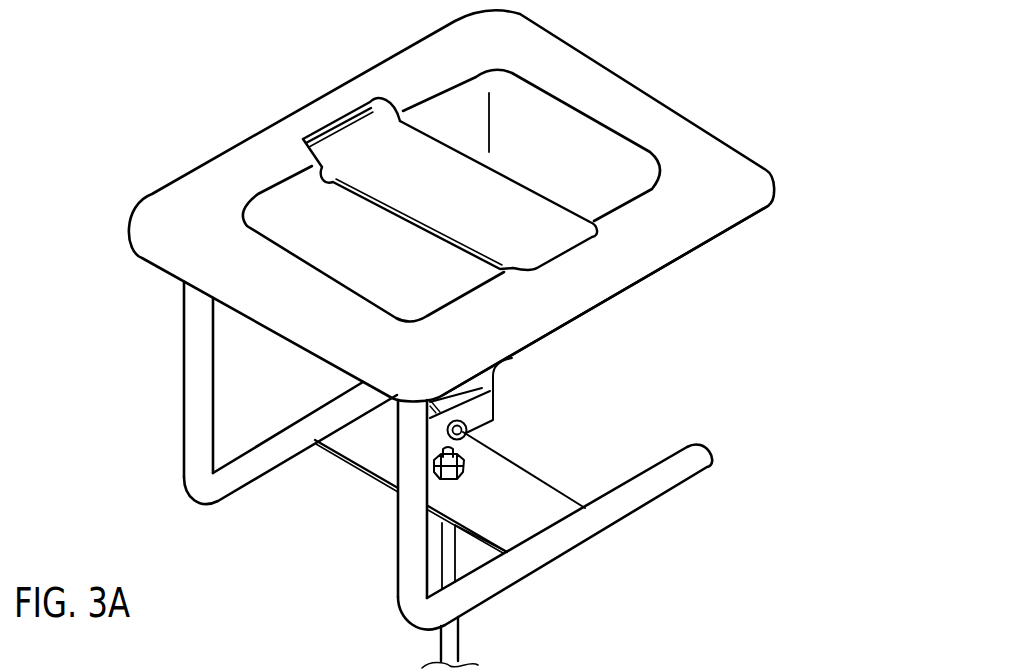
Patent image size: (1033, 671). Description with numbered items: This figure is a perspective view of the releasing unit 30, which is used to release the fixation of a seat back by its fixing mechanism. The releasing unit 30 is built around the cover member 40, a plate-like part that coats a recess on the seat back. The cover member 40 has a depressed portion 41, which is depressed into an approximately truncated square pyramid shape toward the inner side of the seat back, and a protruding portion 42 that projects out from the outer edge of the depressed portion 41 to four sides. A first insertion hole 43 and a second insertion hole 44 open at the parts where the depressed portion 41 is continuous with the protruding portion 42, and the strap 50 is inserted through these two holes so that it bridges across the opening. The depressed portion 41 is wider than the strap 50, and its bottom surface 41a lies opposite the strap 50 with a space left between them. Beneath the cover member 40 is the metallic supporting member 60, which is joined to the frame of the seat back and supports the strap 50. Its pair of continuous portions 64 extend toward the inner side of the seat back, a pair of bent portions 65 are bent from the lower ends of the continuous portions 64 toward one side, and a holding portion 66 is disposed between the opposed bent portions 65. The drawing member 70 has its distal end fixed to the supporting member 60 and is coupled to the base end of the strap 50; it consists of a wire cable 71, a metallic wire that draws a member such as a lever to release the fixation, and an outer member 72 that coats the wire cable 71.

The releasing unit 30 is at (824, 76).
The cover member 40 is at (674, 78).
The depressed portion 41 is at (425, 196).
The bottom surface 41a is at (372, 273).
The protruding portion 42 is at (669, 129).
The first insertion hole 43 is at (578, 207).
The second insertion hole 44 is at (372, 100).
The strap 50 is at (493, 207).
The supporting member 60 is at (280, 566).
The continuous portions 64 is at (200, 357).
The bent portions 65 is at (298, 437).
The holding portion 66 is at (540, 507).
The drawing member 70 is at (593, 375).
The wire cable 71 is at (470, 433).
The outer member 72 is at (463, 452).